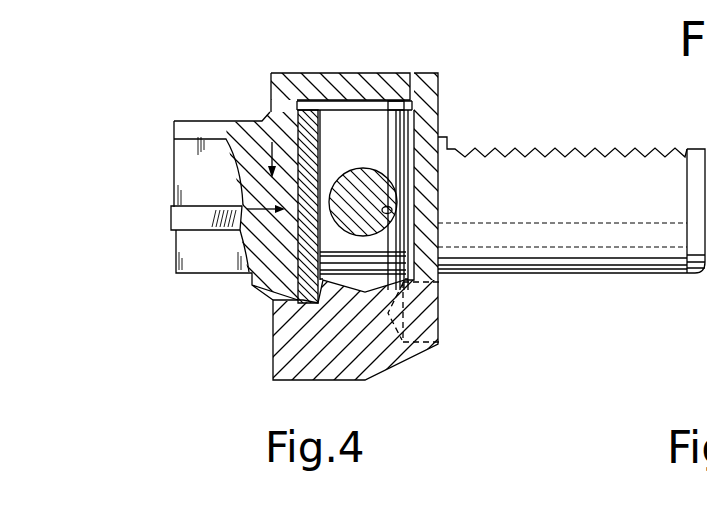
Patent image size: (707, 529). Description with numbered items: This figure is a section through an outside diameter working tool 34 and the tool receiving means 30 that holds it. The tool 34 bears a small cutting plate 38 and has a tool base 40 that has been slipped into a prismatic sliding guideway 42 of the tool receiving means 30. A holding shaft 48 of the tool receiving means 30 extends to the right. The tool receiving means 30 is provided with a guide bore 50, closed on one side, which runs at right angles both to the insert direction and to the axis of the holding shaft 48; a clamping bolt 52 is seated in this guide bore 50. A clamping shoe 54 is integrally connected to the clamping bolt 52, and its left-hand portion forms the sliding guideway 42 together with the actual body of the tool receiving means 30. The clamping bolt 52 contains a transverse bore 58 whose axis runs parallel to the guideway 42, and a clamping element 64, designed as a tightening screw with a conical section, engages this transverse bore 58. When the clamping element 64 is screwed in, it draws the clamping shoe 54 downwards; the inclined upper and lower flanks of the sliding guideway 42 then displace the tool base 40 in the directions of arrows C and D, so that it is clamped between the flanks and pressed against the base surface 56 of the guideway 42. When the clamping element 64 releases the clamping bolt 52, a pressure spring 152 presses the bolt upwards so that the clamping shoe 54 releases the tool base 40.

The tool receiving means 30 is at (455, 126).
The outside diameter working tool 34 is at (206, 110).
The small cutting plate 38 is at (184, 219).
The tool base 40 is at (271, 283).
The prismatic sliding guideway 42 is at (298, 298).
The holding shaft 48 is at (575, 162).
The guide bore 50 is at (318, 127).
The clamping bolt 52 is at (345, 127).
The clamping shoe 54 is at (389, 98).
The base surface 56 is at (297, 170).
The transverse bore 58 is at (378, 218).
The clamping element 64 is at (392, 212).
The pressure spring 152 is at (460, 268).